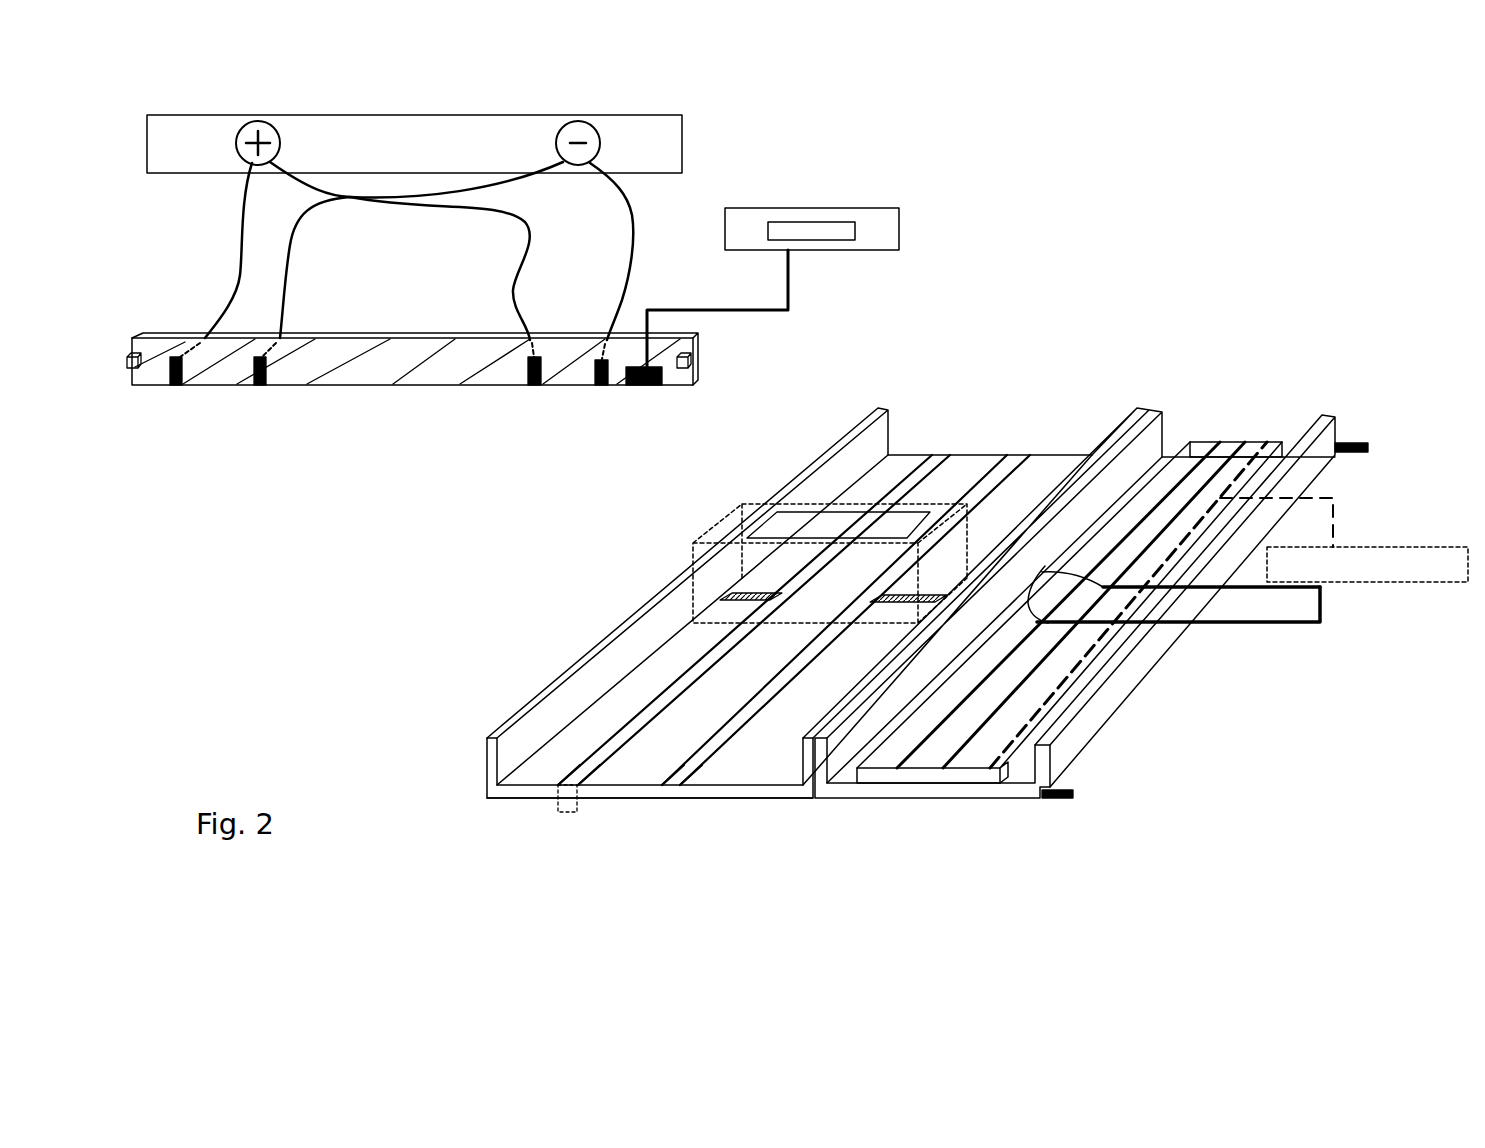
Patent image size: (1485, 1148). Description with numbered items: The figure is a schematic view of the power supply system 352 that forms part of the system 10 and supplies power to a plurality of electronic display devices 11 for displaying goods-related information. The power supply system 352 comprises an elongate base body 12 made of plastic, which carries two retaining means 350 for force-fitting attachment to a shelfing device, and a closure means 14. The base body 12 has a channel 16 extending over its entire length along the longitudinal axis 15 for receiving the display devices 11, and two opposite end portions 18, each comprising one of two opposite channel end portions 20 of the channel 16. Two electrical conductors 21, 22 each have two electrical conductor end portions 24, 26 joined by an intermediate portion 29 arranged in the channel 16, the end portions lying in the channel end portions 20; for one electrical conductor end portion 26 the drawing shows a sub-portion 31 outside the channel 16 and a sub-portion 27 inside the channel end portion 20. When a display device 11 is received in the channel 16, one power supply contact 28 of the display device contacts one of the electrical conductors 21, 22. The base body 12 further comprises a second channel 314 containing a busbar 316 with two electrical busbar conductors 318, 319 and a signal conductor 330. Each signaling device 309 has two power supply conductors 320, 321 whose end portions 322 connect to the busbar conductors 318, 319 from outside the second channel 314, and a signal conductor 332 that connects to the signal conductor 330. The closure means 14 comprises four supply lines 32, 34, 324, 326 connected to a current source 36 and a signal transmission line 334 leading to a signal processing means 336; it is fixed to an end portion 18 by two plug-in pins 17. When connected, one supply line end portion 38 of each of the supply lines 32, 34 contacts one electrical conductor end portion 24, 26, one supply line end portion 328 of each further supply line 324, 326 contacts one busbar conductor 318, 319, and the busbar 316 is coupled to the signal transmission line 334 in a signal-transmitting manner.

The system 10 is at (1100, 280).
The electronic display device 11 is at (728, 525).
The base body 12 is at (832, 792).
The closure means 14 is at (385, 322).
The longitudinal axis 15 is at (630, 790).
The channel 16 is at (628, 698).
The plug-in pin 17 is at (128, 360).
The end portion 18 is at (1153, 450).
The channel end portion 20 is at (895, 465).
The electrical conductor 21 is at (883, 495).
The electrical conductor 22 is at (972, 500).
The electrical conductor end portion 24 is at (933, 455).
The electrical conductor end portion 26 is at (558, 786).
The sub-portion 27 is at (550, 772).
The power supply contact 28 is at (870, 598).
The intermediate portion 29 is at (810, 660).
The sub-portion 31 is at (567, 812).
The electrical supply line 32 is at (243, 257).
The electrical supply line 34 is at (295, 257).
The current source 36 is at (400, 135).
The supply line end portion 38 is at (178, 387).
The signaling device 309 is at (1397, 565).
The further channel 314 is at (1190, 443).
The busbar 316 is at (1257, 442).
The electrical busbar conductor 318 is at (1035, 750).
The electrical busbar conductor 319 is at (1020, 688).
The power supply conductor 320 is at (1268, 622).
The power supply conductor 321 is at (1232, 590).
The end portion 322 is at (1062, 579).
The further supply line 324 is at (517, 283).
The further supply line 326 is at (632, 267).
The supply line end portion 328 is at (533, 386).
The signal conductor 330 is at (1043, 715).
The signal conductor 332 is at (1335, 530).
The signal transmission line 334 is at (710, 290).
The signal processing means 336 is at (868, 250).
The retaining means 350 is at (1068, 800).
The power supply system 352 is at (538, 870).